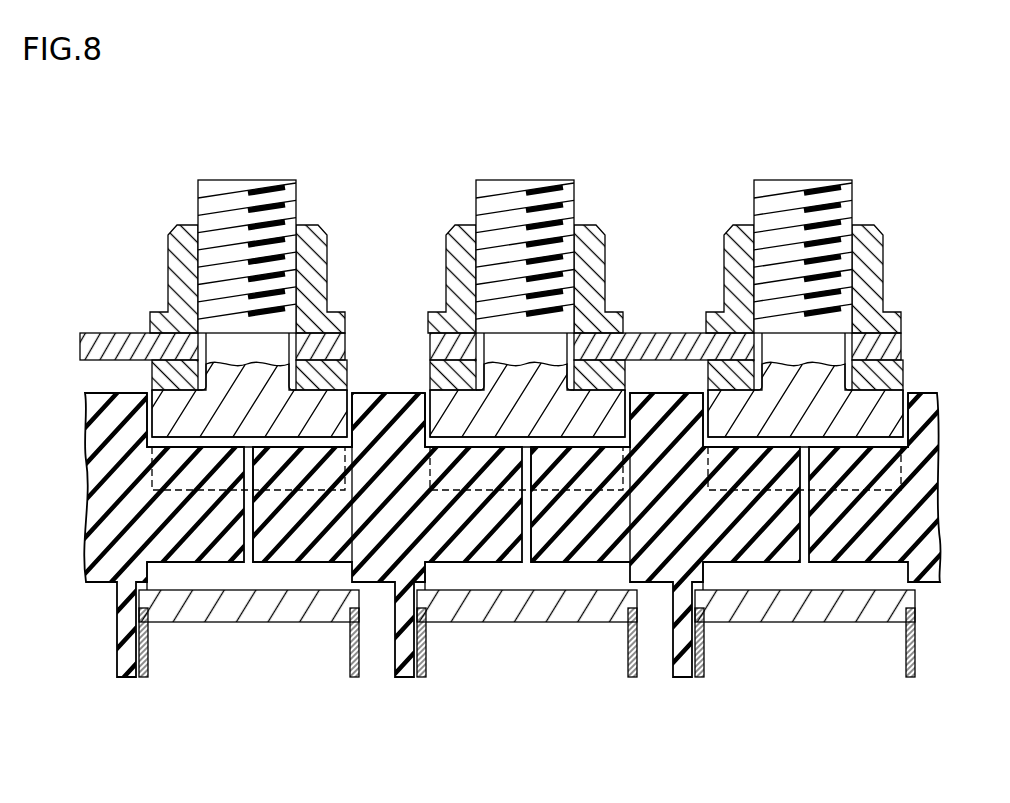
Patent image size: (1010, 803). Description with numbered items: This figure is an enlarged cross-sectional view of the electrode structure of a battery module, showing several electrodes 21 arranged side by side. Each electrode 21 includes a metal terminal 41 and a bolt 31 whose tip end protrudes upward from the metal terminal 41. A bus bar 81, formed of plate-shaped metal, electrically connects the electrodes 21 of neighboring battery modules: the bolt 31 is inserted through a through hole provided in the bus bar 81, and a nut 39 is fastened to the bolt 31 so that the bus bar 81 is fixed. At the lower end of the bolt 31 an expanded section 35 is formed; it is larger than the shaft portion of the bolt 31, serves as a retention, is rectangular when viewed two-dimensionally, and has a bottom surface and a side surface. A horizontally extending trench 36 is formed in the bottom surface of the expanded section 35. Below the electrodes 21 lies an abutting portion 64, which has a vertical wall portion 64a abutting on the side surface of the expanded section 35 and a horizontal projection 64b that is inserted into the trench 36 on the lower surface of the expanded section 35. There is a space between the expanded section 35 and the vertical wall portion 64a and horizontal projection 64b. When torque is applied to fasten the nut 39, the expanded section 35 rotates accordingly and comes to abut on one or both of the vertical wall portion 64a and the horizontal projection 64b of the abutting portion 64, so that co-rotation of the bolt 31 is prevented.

The electrode 21 is at (534, 209).
The bolt 31 is at (245, 180).
The nut 39 is at (318, 262).
The bus bar 81 is at (109, 345).
The metal terminal 41 is at (163, 378).
The expanded section 35 is at (177, 416).
The trench 36 is at (163, 443).
The abutting portion 64 is at (385, 535).
The vertical wall portion 64a is at (385, 412).
The horizontal projection 64b is at (299, 467).